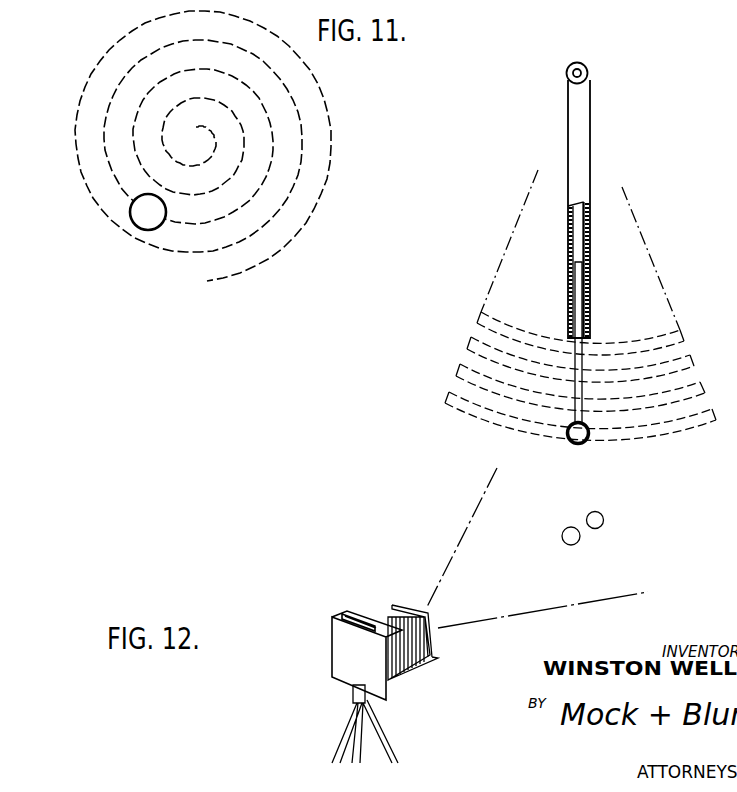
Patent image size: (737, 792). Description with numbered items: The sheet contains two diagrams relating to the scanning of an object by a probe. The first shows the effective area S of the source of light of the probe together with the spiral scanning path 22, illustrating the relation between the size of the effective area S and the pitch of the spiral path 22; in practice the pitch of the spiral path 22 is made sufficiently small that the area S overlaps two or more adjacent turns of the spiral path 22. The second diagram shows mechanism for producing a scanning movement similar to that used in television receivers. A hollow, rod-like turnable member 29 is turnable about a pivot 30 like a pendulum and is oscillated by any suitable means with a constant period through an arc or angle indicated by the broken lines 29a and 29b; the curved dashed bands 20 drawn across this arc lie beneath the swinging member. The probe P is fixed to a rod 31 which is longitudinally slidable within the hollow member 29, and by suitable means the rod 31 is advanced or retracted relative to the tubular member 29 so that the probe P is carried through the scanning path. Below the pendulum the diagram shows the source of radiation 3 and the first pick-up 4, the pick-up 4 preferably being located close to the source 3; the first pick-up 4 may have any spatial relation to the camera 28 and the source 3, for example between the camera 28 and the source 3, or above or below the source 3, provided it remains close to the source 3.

In FIG. 11, the spiral scanning path 22 is at (330, 172).
In FIG. 11, the effective area of the source of light S is at (148, 212).
In FIG. 12, the pivot 30 is at (588, 72).
In FIG. 12, the hollow turnable member 29 is at (590, 138).
In FIG. 12, the broken line 29a is at (498, 267).
In FIG. 12, the broken line 29b is at (655, 258).
In FIG. 12, the sound track bands 20 is at (463, 347).
In FIG. 12, the rod 31 is at (583, 370).
In FIG. 12, the probe P is at (592, 437).
In FIG. 12, the source of radiation 3 is at (595, 520).
In FIG. 12, the first pick-up 4 is at (571, 536).
In FIG. 12, the camera 28 is at (385, 684).